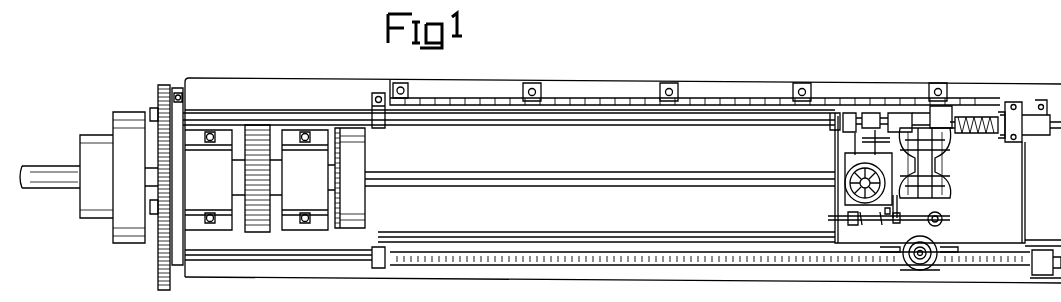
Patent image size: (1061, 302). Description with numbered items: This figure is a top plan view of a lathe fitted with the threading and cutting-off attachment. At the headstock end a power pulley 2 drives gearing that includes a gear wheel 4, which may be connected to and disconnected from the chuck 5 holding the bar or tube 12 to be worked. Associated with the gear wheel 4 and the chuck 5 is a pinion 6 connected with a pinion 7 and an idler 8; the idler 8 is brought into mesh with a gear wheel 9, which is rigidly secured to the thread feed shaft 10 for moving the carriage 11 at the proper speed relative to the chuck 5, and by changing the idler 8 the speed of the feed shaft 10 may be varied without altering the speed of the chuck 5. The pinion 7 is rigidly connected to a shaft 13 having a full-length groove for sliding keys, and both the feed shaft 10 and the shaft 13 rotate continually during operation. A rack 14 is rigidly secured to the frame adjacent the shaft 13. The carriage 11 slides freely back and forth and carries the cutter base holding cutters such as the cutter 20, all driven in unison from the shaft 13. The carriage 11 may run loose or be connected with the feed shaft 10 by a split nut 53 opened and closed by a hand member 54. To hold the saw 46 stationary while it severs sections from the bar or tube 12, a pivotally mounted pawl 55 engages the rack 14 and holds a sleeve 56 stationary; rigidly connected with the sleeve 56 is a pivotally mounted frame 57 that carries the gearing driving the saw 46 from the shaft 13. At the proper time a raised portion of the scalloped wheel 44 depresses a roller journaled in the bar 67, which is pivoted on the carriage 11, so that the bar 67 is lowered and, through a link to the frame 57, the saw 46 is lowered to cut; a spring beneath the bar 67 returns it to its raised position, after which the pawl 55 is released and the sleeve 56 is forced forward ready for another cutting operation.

The power pulley 2 is at (126, 243).
The gear wheel 4 is at (256, 135).
The chuck 5 is at (368, 160).
The pinion 6 is at (165, 172).
The pinion 7 is at (165, 84).
The idler 8 is at (160, 210).
The gear wheel 9 is at (162, 288).
The thread feed shaft 10 is at (270, 253).
The carriage 11 is at (1025, 212).
The bar or tube 12 is at (622, 180).
The shaft 13 is at (796, 122).
The rack 14 is at (828, 102).
The cutter 20 is at (896, 218).
The scalloped wheel 44 is at (877, 222).
The saw 46 is at (885, 212).
The split nut 53 is at (936, 268).
The hand member 54 is at (916, 270).
The pawl 55 is at (898, 113).
The sleeve 56 is at (928, 118).
The frame 57 is at (975, 135).
The bar 67 is at (858, 221).